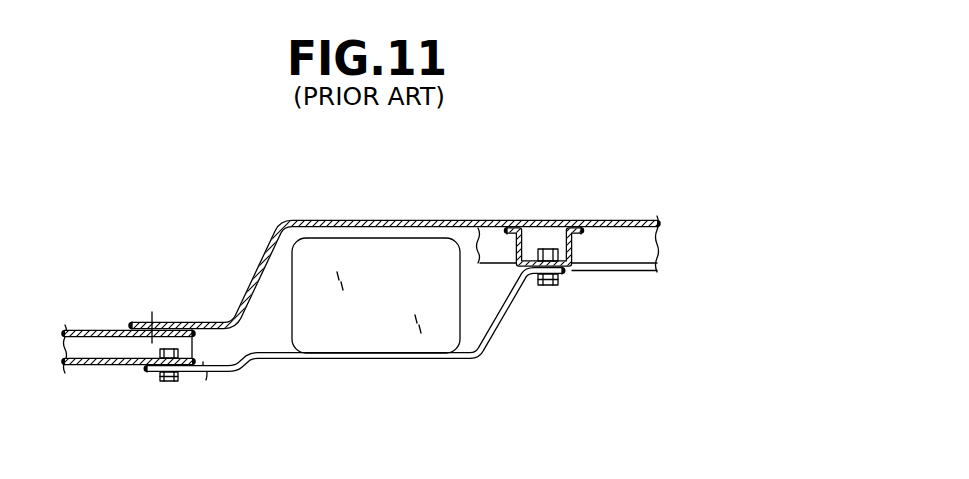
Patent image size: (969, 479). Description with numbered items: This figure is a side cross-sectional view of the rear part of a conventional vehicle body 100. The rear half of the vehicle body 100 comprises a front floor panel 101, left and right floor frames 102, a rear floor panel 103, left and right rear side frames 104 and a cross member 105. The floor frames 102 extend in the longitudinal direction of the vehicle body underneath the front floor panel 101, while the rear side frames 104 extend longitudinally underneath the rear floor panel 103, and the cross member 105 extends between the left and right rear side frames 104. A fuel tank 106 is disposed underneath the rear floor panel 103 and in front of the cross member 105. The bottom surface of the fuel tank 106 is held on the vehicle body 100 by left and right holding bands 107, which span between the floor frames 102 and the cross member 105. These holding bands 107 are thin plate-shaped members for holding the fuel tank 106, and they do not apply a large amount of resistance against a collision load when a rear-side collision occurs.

The vehicle body 100 is at (190, 212).
The front floor panel 101 is at (93, 328).
The floor frame 102 is at (81, 367).
The rear floor panel 103 is at (368, 220).
The rear side frame 104 is at (610, 243).
The cross member 105 is at (577, 247).
The fuel tank 106 is at (403, 342).
The holding band 107 is at (273, 363).